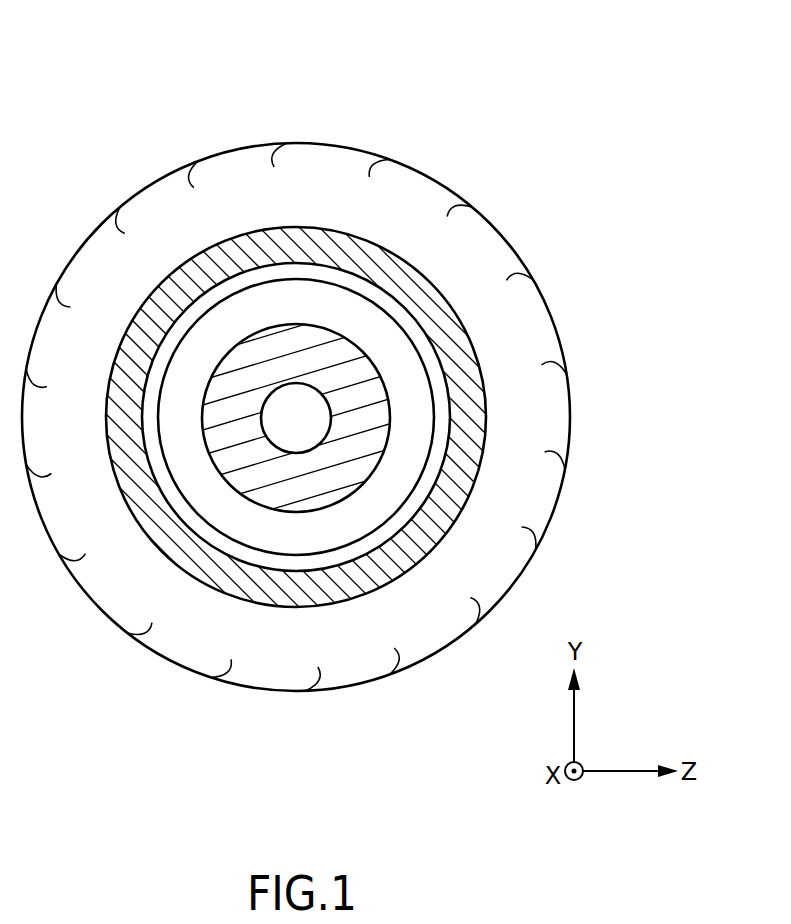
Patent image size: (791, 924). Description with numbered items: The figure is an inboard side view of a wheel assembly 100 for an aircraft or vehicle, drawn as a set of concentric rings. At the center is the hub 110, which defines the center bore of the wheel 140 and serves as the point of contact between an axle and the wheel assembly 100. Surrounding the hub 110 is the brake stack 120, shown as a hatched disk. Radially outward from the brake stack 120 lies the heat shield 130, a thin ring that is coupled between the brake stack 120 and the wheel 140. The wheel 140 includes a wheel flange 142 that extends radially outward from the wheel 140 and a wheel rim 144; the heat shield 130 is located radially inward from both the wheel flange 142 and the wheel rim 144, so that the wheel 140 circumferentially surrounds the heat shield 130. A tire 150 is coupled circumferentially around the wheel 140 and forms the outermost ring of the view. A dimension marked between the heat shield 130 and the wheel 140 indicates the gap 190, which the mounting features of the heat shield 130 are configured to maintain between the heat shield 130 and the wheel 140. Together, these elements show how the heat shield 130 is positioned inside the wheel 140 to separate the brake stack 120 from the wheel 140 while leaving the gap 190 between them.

The wheel assembly 100 is at (552, 90).
The hub 110 is at (271, 385).
The brake stack 120 is at (278, 355).
The heat shield 130 is at (331, 285).
The wheel 140 is at (457, 358).
The wheel flange 142 is at (433, 290).
The wheel rim 144 is at (465, 442).
The tire 150 is at (537, 507).
The gap 190 is at (158, 410).